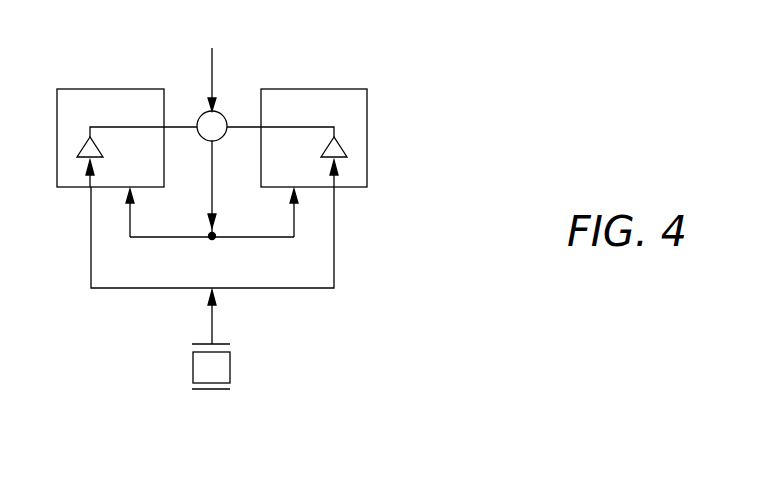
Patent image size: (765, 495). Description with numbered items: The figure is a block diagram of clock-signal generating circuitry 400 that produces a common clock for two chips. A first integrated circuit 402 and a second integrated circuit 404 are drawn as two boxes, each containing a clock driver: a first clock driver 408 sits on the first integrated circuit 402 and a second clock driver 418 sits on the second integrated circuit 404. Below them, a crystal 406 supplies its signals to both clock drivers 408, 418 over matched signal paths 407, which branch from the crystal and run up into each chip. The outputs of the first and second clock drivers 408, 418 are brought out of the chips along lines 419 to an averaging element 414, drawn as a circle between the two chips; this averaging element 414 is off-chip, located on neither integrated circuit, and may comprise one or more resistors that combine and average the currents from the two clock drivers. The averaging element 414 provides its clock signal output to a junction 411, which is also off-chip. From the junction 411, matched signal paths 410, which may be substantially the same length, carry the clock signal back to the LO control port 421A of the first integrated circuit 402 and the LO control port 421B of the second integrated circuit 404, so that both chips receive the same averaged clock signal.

The clock-signal generating circuitry 400 is at (490, 103).
The first integrated circuit 402 is at (108, 89).
The second integrated circuit 404 is at (347, 89).
The crystal 406 is at (168, 365).
The matched signal paths 407 is at (152, 290).
The first clock driver 408 is at (101, 146).
The matched signal paths 410 is at (152, 238).
The junction 411 is at (212, 240).
The averaging element 414 is at (217, 111).
The second clock driver 418 is at (322, 148).
The averaged clock lines 419 is at (187, 128).
The LO control port 421A is at (131, 193).
The LO control port 421B is at (293, 193).